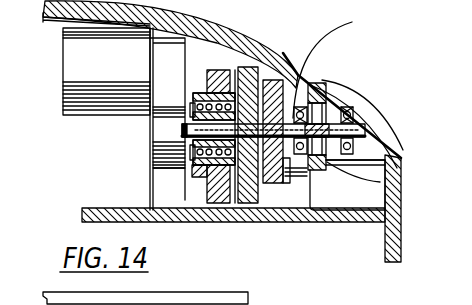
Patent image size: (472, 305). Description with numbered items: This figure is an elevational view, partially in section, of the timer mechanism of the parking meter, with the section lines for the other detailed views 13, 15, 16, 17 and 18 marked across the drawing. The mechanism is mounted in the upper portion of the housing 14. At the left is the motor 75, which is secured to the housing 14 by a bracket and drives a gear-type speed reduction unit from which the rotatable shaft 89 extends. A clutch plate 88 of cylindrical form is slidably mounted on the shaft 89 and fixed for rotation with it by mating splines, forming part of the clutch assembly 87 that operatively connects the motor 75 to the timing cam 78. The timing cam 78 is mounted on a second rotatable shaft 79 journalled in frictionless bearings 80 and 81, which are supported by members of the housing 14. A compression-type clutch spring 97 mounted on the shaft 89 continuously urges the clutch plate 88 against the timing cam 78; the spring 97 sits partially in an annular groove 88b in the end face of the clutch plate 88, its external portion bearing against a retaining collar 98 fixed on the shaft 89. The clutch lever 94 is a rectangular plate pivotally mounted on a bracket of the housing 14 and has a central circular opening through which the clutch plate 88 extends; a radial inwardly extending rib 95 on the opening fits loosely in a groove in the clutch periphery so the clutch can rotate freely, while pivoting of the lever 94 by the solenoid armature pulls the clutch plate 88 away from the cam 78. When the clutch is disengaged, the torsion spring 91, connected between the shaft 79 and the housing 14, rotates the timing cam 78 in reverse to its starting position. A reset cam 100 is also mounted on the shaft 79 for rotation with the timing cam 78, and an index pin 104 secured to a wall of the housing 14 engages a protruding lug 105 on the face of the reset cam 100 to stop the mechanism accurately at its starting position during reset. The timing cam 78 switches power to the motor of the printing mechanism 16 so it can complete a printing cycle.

The section line 13 is at (377, 258).
The housing 14 is at (400, 190).
The section line 15 is at (264, 28).
The printing mechanism 16 is at (240, 5).
The section line 17 is at (292, 50).
The section line 18 is at (317, 248).
The motor 75 is at (80, 70).
The timing cam 78 is at (245, 224).
The rotatable shaft 79 is at (368, 90).
The frictionless bearing 80 is at (335, 65).
The frictionless bearing 81 is at (355, 112).
The clutch assembly 87 is at (205, 168).
The clutch plate 88 is at (200, 92).
The annular groove 88b is at (200, 97).
The rotatable shaft 89 is at (152, 140).
The torsion spring 91 is at (399, 168).
The clutch lever 94 is at (163, 221).
The rib 95 is at (198, 206).
The clutch spring 97 is at (153, 160).
The retaining collar 98 is at (152, 115).
The reset cam 100 is at (237, 253).
The index pin 104 is at (283, 166).
The lug 105 is at (318, 197).